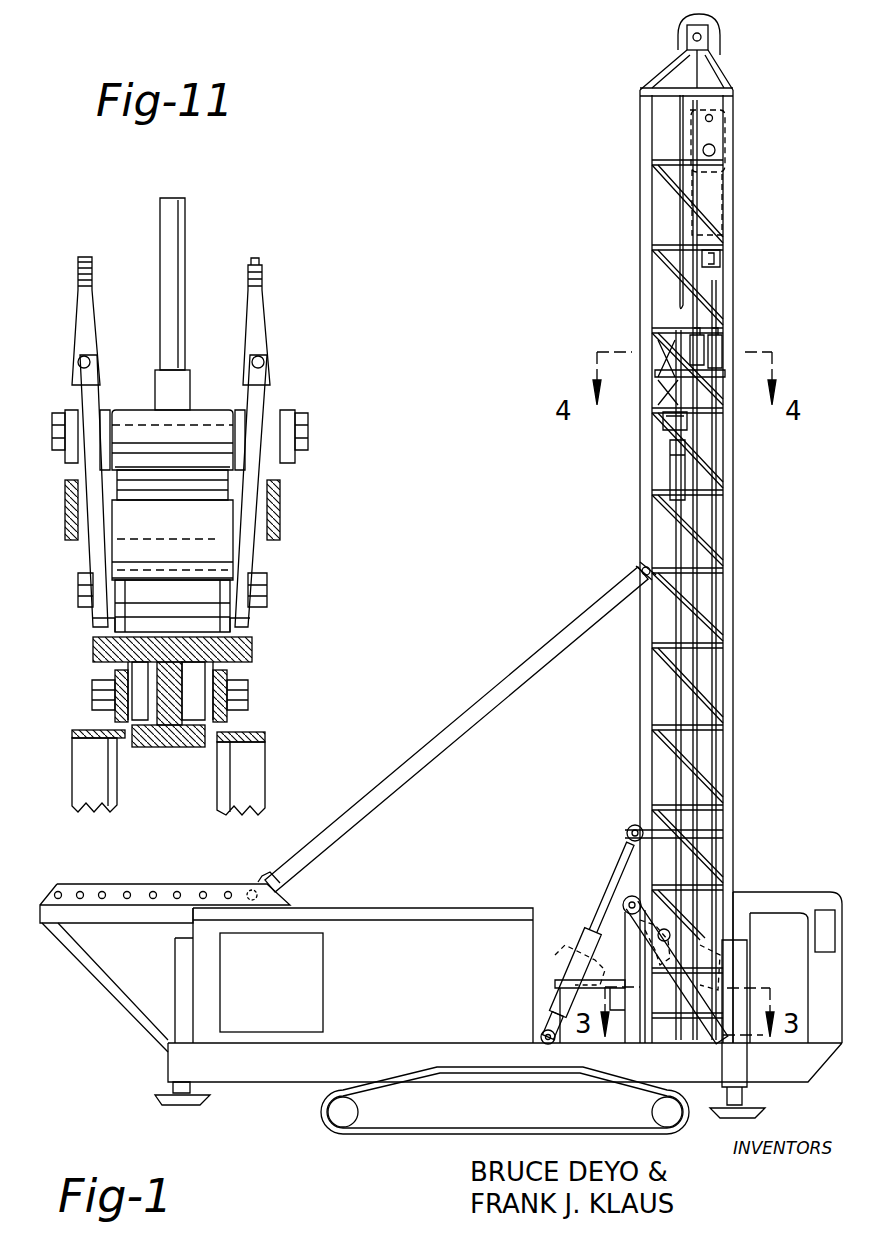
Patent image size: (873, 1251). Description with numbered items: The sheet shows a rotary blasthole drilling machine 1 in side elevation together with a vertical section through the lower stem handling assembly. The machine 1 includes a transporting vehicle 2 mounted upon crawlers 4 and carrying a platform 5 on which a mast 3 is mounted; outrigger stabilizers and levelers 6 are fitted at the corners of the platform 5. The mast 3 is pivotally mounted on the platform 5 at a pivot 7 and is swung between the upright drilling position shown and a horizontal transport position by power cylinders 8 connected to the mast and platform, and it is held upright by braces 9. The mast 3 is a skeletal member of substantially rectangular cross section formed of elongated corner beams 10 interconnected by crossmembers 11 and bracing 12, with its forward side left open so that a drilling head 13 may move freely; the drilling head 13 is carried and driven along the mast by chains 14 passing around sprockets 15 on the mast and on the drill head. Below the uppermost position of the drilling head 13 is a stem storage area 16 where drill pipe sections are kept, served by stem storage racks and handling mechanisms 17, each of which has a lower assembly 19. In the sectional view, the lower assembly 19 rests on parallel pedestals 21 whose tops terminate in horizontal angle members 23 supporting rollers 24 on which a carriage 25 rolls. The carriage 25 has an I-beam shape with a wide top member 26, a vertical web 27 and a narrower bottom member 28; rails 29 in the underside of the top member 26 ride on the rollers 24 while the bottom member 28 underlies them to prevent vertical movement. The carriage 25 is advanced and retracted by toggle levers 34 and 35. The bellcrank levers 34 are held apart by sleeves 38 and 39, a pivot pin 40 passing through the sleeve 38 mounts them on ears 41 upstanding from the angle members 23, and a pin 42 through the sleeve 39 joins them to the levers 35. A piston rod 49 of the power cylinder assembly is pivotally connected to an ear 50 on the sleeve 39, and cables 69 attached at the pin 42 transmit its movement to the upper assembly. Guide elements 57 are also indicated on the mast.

In FIG. 1, the blasthole drilling machine 1 is at (494, 877).
In FIG. 1, the transporting vehicle 2 is at (138, 1066).
In FIG. 1, the mast 3 is at (751, 620).
In FIG. 1, the crawlers 4 is at (322, 1122).
In FIG. 1, the platform 5 is at (508, 1048).
In FIG. 1, the outrigger stabilizers and levelers 6 is at (160, 1098).
In FIG. 1, the pivot 7 is at (624, 902).
In FIG. 1, the power cylinders 8 is at (588, 937).
In FIG. 1, the braces 9 is at (436, 750).
In FIG. 1, the corner beams 10 is at (650, 678).
In FIG. 1, the crossmembers 11 is at (650, 182).
In FIG. 1, the bracing 12 is at (712, 296).
In FIG. 1, the drilling head 13 is at (718, 190).
In FIG. 1, the chains 14 is at (680, 118).
In FIG. 1, the sprockets 15 is at (721, 42).
In FIG. 1, the stem storage area 16 is at (660, 482).
In FIG. 1, the stem storage racks and handling mechanisms 17 is at (665, 418).
In FIG. 1, the guide rail 57 is at (713, 437).
In FIG. 11, the lower assembly 19 is at (311, 440).
In FIG. 11, the pedestals 21 is at (72, 790).
In FIG. 11, the angle members 23 is at (72, 748).
In FIG. 11, the rollers 24 is at (130, 710).
In FIG. 11, the carriage 25 is at (270, 661).
In FIG. 11, the top member 26 is at (255, 643).
In FIG. 11, the vertical web 27 is at (172, 748).
In FIG. 11, the bottom member 28 is at (147, 748).
In FIG. 11, the rails 29 is at (192, 665).
In FIG. 11, the toggle levers 34 is at (93, 550).
In FIG. 11, the toggle levers 35 is at (65, 510).
In FIG. 11, the sleeve 38 is at (143, 588).
In FIG. 11, the sleeve 39 is at (136, 408).
In FIG. 11, the pivot pin 40 is at (268, 593).
In FIG. 11, the ears 41 is at (108, 622).
In FIG. 11, the pin 42 is at (296, 424).
In FIG. 11, the piston rod 49 is at (186, 306).
In FIG. 11, the ear 50 is at (192, 392).
In FIG. 11, the cables 69 is at (92, 263).